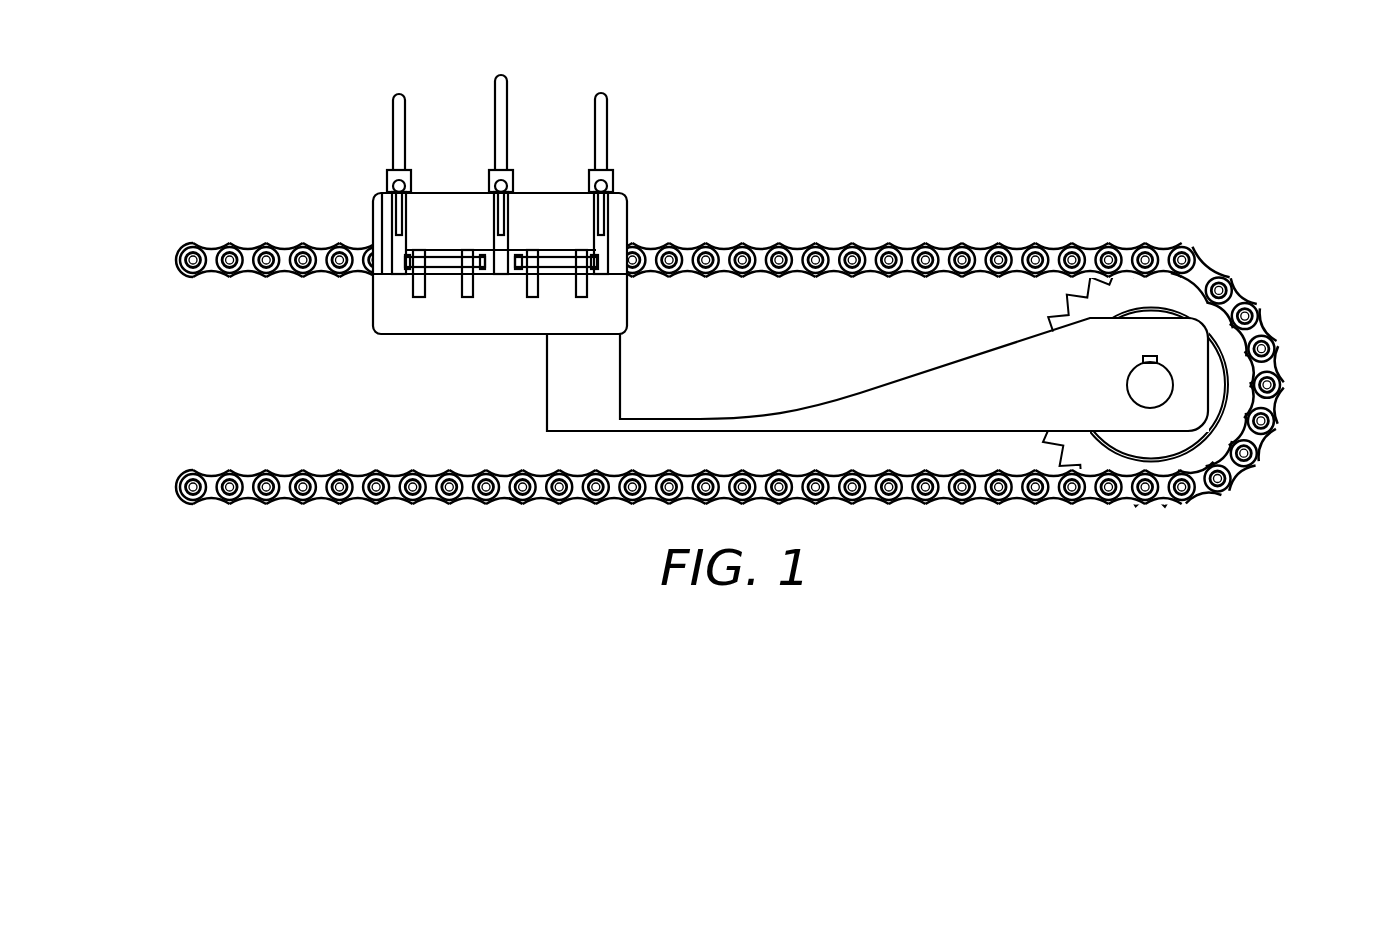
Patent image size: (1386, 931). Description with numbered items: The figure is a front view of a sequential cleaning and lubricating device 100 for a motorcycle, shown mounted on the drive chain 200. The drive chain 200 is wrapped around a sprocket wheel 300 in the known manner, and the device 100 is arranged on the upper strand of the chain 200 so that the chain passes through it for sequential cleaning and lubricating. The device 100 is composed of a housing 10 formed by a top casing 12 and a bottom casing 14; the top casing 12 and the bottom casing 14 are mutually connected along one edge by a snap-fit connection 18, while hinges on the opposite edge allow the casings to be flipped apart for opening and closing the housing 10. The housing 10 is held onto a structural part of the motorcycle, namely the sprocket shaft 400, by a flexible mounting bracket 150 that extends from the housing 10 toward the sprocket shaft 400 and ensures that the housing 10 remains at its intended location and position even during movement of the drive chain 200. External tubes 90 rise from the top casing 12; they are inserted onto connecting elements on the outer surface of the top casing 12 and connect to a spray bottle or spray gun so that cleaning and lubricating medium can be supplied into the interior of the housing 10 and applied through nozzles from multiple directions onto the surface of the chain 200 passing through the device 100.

The cleaning and lubricating device 100 is at (768, 52).
The housing 10 is at (372, 211).
The top casing 12 is at (437, 198).
The bottom casing 14 is at (478, 336).
The snap-fit connection 18 is at (419, 287).
The external tubes 90 is at (603, 210).
The flexible mounting bracket 150 is at (957, 390).
The drive chain 200 is at (1003, 244).
The sprocket wheel 300 is at (1158, 296).
The sprocket shaft 400 is at (1150, 386).